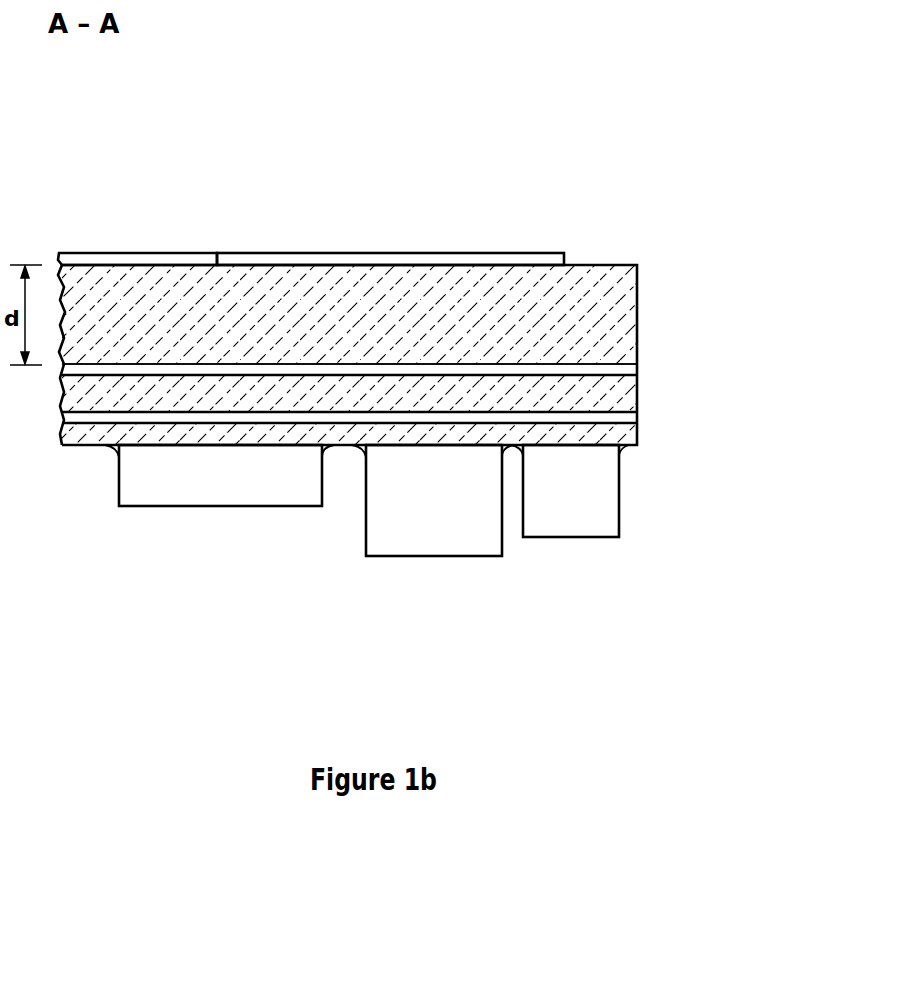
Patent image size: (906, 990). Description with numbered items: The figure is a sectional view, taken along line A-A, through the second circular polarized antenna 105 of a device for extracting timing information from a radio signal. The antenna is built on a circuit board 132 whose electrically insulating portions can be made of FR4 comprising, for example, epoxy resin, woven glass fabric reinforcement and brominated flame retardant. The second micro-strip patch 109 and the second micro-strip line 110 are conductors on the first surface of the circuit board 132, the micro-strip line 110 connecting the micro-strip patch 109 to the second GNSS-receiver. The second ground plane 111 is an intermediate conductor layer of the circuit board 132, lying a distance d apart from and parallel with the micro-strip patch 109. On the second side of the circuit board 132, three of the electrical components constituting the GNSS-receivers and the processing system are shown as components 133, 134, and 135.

The second circular polarized antenna 105 is at (561, 183).
The second micro-strip patch 109 is at (405, 253).
The second micro-strip line 110 is at (148, 253).
The second ground plane 111 is at (637, 368).
The circuit board 132 is at (738, 245).
The electrical component 133 is at (188, 506).
The electrical component 134 is at (400, 556).
The electrical component 135 is at (565, 537).